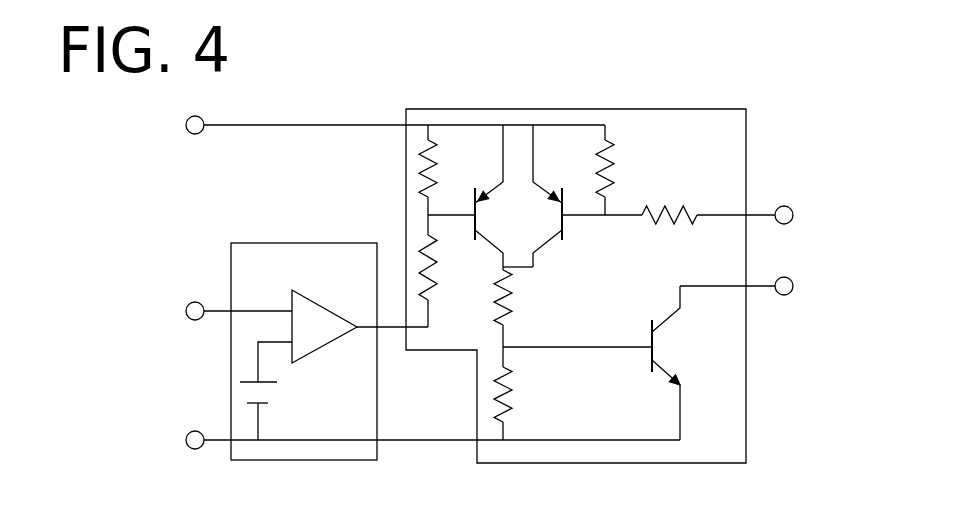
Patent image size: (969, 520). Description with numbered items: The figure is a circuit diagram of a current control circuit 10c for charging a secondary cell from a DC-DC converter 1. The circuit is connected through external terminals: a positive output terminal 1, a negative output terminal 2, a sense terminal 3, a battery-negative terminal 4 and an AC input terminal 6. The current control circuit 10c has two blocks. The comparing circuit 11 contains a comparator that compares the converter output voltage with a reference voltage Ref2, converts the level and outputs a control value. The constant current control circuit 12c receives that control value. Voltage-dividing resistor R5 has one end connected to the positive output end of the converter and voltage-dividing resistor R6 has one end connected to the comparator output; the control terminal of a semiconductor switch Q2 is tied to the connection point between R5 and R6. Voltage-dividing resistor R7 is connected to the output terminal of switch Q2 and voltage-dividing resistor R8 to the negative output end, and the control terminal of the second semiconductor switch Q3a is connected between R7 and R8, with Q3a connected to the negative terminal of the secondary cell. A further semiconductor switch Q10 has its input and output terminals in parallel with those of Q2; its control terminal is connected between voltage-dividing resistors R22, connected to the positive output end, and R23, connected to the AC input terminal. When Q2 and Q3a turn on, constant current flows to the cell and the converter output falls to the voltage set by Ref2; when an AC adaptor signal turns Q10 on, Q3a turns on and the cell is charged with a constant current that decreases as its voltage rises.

The converter 1 is at (153, 124).
The output terminal (Vo-) 2 is at (152, 437).
The sense terminal (SENS) 3 is at (139, 310).
The battery negative terminal (BATT-) 4 is at (842, 294).
The AC input terminal (AC IN) 6 is at (835, 224).
The current control circuit 10c is at (283, 192).
The comparing circuit 11 is at (360, 392).
The constant current control circuit 12c is at (738, 458).
The voltage-dividing resistor R5 is at (447, 170).
The voltage-dividing resistor R6 is at (445, 271).
The voltage-dividing resistor R7 is at (522, 307).
The voltage-dividing resistor R8 is at (523, 393).
The voltage-dividing resistor R22 is at (634, 170).
The voltage-dividing resistor R23 is at (677, 198).
The semiconductor switch Q2 is at (498, 196).
The semiconductor switch Q10 is at (576, 196).
The second semiconductor switch Q3a is at (683, 363).
The reference voltage Ref2 is at (281, 411).